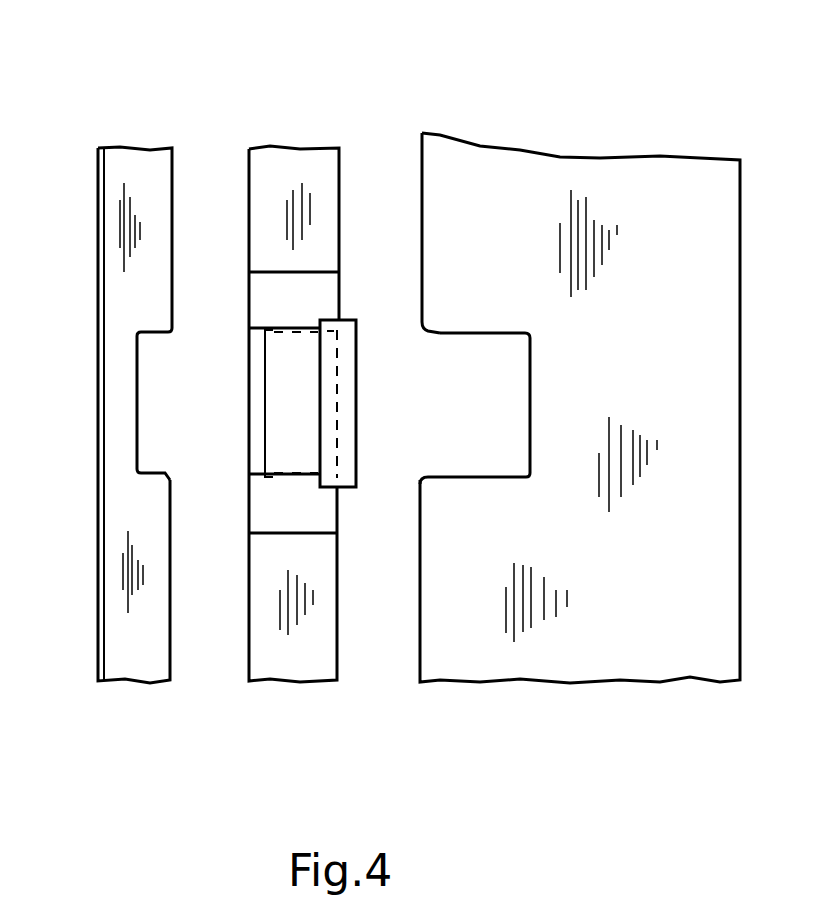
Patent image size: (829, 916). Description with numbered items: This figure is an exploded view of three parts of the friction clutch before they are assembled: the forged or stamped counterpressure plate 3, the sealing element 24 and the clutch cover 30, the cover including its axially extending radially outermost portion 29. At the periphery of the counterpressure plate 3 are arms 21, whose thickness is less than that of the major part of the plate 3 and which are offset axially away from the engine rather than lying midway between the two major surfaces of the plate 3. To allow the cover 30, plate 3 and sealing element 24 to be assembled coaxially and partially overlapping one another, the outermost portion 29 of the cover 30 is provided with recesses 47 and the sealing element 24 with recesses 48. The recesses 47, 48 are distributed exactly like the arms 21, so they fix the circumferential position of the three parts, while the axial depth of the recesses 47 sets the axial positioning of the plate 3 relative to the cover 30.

The sealing element 24 is at (131, 165).
The counterpressure plate 3 is at (281, 177).
The arms 21 is at (343, 345).
The axially extending radially outermost portion 29 is at (545, 360).
The clutch cover 30 is at (527, 197).
The recesses 47 is at (500, 463).
The recesses 48 is at (155, 448).